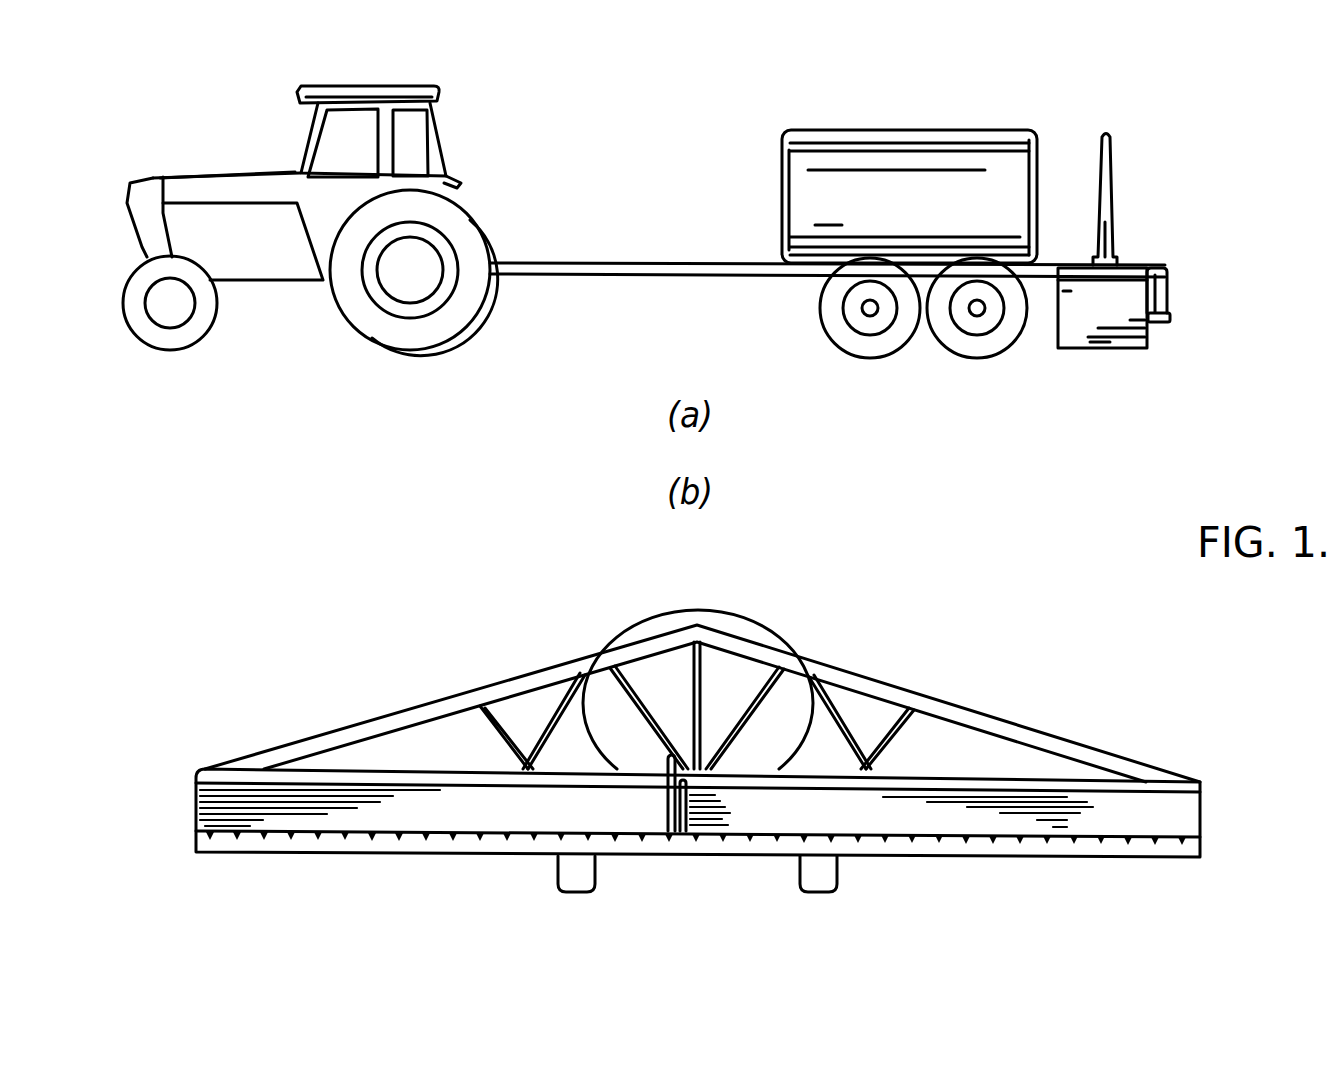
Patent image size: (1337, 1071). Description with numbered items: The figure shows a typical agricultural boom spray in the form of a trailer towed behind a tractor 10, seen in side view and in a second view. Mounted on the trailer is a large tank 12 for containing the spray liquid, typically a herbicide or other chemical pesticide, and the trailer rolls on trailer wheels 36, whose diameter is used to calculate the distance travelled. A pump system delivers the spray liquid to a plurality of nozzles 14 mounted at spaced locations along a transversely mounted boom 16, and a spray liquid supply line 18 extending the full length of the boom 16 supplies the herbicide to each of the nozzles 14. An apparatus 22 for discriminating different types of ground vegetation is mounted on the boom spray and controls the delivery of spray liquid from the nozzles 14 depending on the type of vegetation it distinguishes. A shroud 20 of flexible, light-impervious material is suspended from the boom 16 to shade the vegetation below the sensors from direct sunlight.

The tractor 10 is at (456, 182).
The tank 12 is at (808, 181).
The nozzles 14 is at (1170, 327).
The boom 16 is at (1112, 171).
The spray liquid supply line 18 is at (885, 838).
The shroud 20 is at (1080, 326).
The apparatus for discriminating different types of ground vegetation 22 is at (717, 822).
The trailer wheels 36 is at (822, 311).